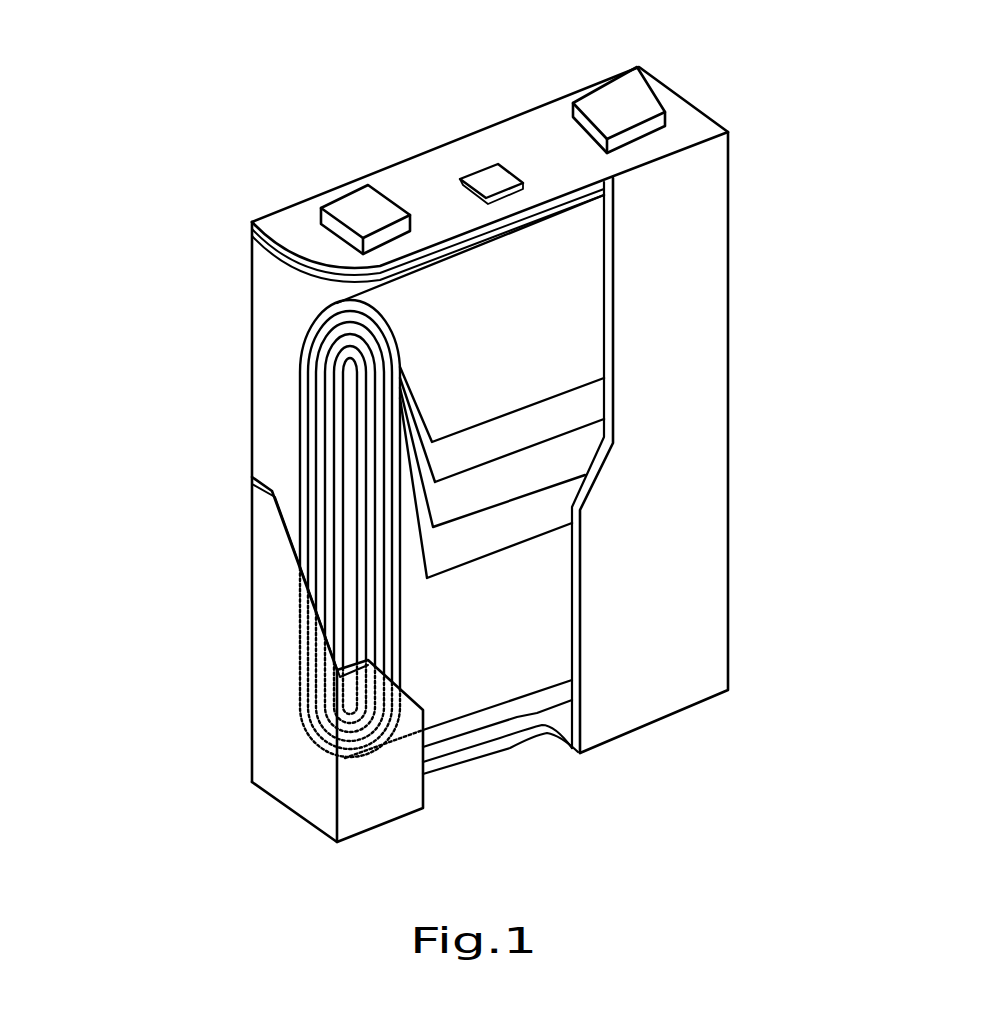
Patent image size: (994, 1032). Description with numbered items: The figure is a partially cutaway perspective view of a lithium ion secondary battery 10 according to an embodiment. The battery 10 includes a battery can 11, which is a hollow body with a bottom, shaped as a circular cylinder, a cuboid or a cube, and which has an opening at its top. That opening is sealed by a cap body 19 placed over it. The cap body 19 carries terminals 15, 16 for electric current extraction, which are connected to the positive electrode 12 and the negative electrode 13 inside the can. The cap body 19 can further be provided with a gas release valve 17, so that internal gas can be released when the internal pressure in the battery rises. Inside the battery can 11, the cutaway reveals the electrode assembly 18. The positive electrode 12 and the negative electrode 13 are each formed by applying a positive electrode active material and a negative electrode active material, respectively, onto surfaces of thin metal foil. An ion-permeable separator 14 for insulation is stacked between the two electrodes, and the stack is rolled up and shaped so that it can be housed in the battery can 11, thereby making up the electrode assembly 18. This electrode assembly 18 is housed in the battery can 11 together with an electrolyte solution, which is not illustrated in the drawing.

The battery 10 is at (211, 502).
The battery can 11 is at (378, 767).
The positive electrode 12 is at (582, 402).
The negative electrode 13 is at (552, 500).
The separator 14 is at (585, 447).
The terminal 15 is at (633, 112).
The terminal 16 is at (370, 208).
The gas release valve 17 is at (470, 170).
The electrode assembly 18 is at (843, 285).
The cap body 19 is at (510, 142).